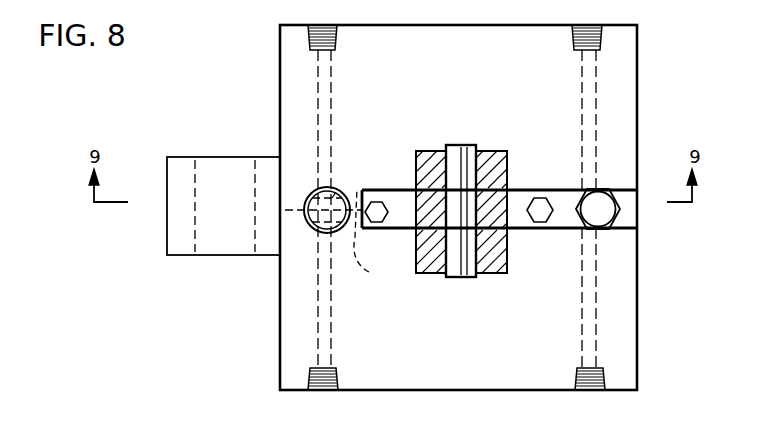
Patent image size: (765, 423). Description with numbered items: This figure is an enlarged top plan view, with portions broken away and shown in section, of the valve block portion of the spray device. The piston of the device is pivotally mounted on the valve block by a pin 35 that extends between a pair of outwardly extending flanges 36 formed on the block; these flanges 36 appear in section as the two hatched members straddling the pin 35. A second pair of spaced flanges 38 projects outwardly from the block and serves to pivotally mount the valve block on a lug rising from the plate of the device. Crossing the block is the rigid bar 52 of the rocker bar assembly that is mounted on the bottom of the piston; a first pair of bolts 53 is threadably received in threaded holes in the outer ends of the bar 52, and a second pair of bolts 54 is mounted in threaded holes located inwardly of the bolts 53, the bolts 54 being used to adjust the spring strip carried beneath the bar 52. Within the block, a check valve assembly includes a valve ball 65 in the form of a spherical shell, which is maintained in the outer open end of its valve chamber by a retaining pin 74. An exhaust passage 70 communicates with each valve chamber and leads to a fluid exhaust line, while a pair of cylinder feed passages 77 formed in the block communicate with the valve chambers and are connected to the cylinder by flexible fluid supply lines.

The pin 35 is at (461, 156).
The outwardly extending flanges 36 is at (430, 162).
The spaced flanges 38 is at (178, 243).
The rigid bar 52 is at (638, 226).
The first pair of bolts 53 is at (593, 210).
The second pair of bolts 54 is at (538, 200).
The valve ball 65 is at (338, 186).
The exhaust passage 70 is at (330, 100).
The retaining pin 74 is at (372, 238).
The cylinder feed passages 77 is at (330, 340).